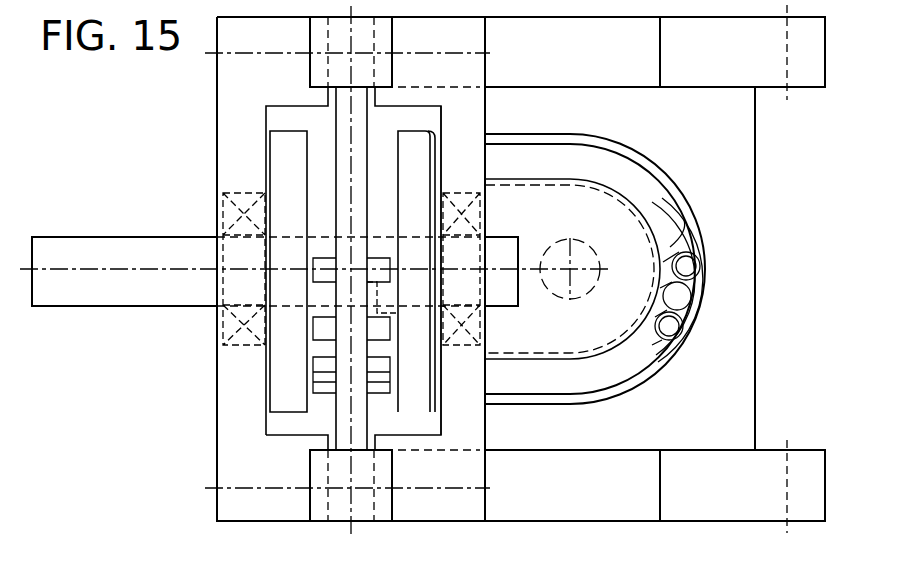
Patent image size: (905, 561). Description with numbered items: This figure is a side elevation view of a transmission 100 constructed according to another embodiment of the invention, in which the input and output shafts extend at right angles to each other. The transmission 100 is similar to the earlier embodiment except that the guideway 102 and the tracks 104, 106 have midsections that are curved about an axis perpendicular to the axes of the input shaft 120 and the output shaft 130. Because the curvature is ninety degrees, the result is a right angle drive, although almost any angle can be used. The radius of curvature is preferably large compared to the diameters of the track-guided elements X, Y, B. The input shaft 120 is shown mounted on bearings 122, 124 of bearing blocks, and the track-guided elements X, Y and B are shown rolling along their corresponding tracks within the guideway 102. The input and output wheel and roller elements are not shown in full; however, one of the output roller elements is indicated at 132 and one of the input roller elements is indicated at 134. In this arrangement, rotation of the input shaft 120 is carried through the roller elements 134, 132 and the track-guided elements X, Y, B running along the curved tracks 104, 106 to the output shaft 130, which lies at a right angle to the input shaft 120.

The transmission 100 is at (178, 428).
The guideway 102 is at (612, 160).
The track 104 is at (562, 176).
The track 106 is at (512, 144).
The input shaft 120 is at (80, 308).
The bearing 122 is at (245, 352).
The bearing 124 is at (460, 345).
The output shaft 130 is at (584, 306).
The output roller element 132 is at (663, 362).
The input roller element 134 is at (392, 313).
The track-guided element B is at (670, 247).
The track-guided element X is at (692, 252).
The track-guided element Y is at (691, 296).